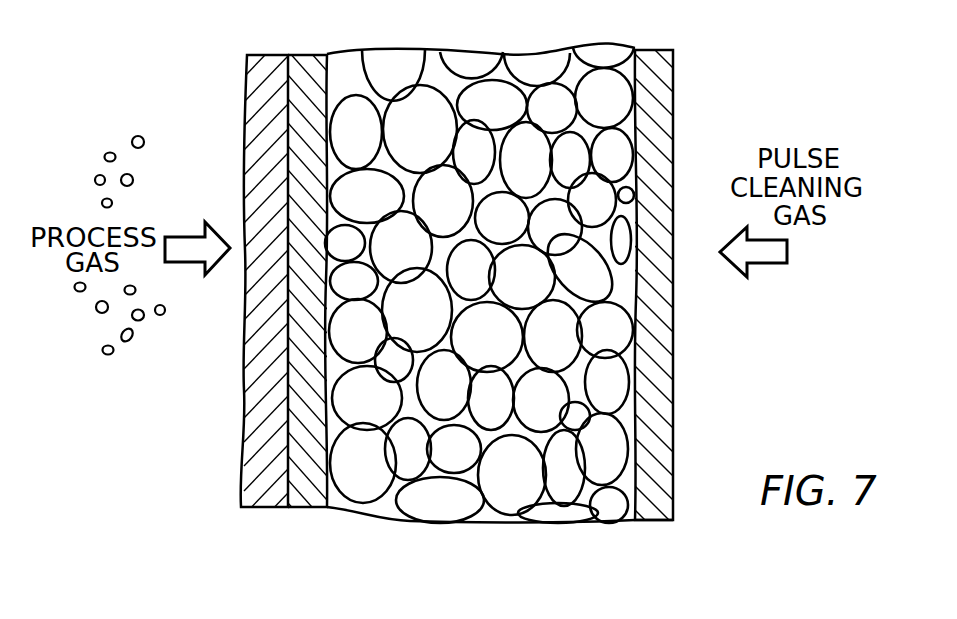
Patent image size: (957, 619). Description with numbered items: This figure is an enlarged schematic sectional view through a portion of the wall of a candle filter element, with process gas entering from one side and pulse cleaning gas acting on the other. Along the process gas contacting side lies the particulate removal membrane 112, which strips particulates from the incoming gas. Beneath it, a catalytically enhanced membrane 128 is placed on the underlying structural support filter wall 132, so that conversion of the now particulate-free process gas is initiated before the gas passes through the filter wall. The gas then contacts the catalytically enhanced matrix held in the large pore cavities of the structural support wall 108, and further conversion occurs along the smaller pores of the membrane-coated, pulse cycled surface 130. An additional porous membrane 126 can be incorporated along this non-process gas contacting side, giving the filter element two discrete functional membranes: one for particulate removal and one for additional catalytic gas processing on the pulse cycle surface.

The structural support wall 108 is at (623, 528).
The particulate removal membrane 112 is at (254, 508).
The porous membrane 126 is at (655, 521).
The catalytically enhanced membrane 128 is at (305, 508).
The membrane-coated pulse cycled surface 130 is at (637, 407).
The underlying structural support filter wall 132 is at (288, 384).